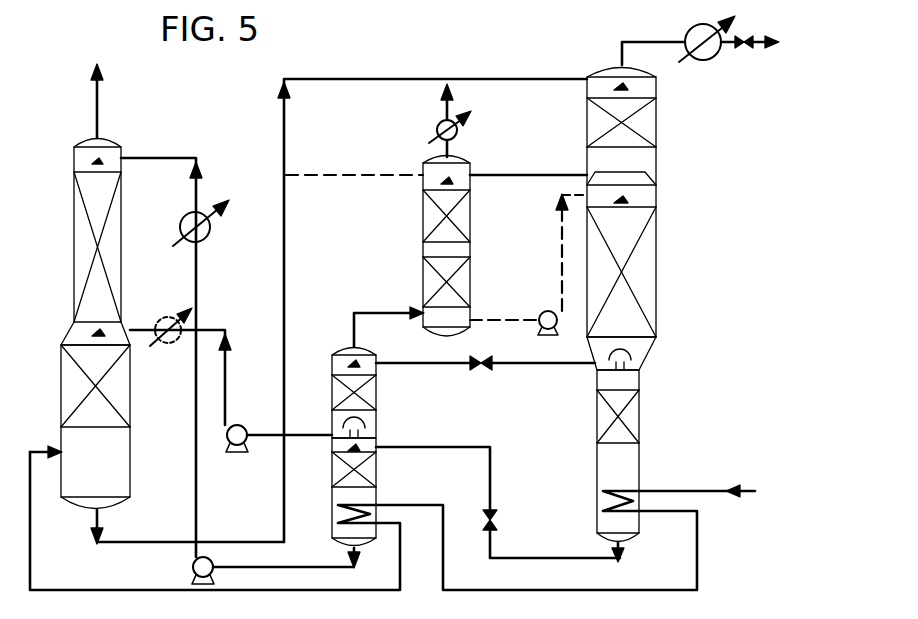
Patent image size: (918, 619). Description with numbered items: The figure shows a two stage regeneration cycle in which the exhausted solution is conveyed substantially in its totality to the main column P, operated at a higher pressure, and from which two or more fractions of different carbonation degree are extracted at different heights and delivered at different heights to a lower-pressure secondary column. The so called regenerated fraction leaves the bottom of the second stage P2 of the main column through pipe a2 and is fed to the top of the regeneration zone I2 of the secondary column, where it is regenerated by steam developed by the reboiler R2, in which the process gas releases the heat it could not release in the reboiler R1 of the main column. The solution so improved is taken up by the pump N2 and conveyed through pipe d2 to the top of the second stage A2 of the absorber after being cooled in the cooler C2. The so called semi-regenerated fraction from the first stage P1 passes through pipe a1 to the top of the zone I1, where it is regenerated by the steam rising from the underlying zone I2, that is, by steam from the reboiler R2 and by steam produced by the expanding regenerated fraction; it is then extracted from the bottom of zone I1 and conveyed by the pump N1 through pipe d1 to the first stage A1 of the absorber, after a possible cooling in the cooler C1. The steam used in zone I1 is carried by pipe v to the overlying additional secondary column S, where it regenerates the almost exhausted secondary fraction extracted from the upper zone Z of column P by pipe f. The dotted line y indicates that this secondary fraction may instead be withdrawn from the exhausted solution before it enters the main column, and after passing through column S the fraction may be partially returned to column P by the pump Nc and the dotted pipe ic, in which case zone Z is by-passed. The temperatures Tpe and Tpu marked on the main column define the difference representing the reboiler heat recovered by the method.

The first stage of the absorber A1 is at (160, 433).
The second stage of the absorber A2 is at (83, 193).
The cooler C1 is at (180, 366).
The cooler C2 is at (175, 357).
The pump N1 is at (237, 458).
The pump N2 is at (187, 574).
The pipe d1 is at (289, 428).
The pipe d2 is at (283, 559).
The zone of the secondary column I1 is at (344, 393).
The regeneration zone of the secondary column I2 is at (341, 503).
The pipe v is at (389, 319).
The pipe a1 is at (485, 357).
The pipe a2 is at (498, 503).
The reboiler of the main column R1 is at (697, 510).
The reboiler R2 is at (536, 547).
The additional secondary column S is at (438, 210).
The dotted line y is at (354, 165).
The pipe f is at (528, 165).
The pipe ic is at (504, 309).
The pump Nc is at (548, 270).
The temperature Tpe is at (432, 301).
The temperature Tpu is at (585, 549).
The main column P is at (683, 176).
The upper zone of the main column Z is at (635, 122).
The first stage of the main column P1 is at (633, 254).
The second stage of the main column P2 is at (625, 439).